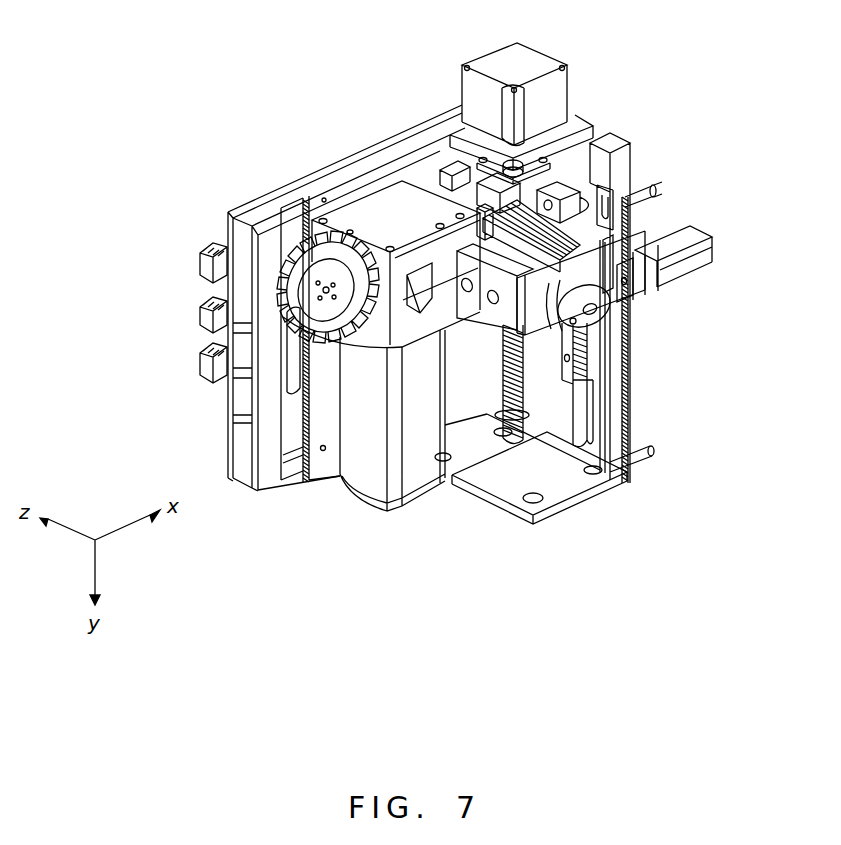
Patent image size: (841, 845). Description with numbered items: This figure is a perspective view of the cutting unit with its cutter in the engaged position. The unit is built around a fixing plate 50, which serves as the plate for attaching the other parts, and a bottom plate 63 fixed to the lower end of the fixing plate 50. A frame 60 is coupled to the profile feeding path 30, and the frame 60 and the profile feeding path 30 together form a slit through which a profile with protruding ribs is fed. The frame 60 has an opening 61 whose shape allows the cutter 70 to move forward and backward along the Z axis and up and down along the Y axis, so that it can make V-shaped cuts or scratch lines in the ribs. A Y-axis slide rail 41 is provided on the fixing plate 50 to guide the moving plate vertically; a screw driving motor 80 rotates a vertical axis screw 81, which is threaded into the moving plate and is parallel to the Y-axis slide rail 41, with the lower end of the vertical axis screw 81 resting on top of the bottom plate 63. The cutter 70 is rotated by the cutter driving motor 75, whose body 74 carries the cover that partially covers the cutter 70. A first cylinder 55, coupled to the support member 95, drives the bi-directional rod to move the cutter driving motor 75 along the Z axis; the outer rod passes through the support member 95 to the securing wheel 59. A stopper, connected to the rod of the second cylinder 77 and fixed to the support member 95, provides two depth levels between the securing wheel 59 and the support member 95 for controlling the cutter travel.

The profile feeding path 30 is at (322, 170).
The Y-axis slide rail 41 is at (570, 370).
The fixing plate 50 is at (612, 142).
The first cylinder 55 is at (535, 242).
The securing wheel 59 is at (600, 313).
The frame 60 is at (323, 420).
The opening 61 is at (284, 402).
The bottom plate 63 is at (553, 486).
The cutter 70 is at (282, 288).
The body 74 is at (372, 208).
The cutter driving motor 75 is at (372, 480).
The second cylinder 77 is at (692, 236).
The screw driving motor 80 is at (533, 58).
The vertical axis screw 81 is at (513, 390).
The support member 95 is at (534, 316).